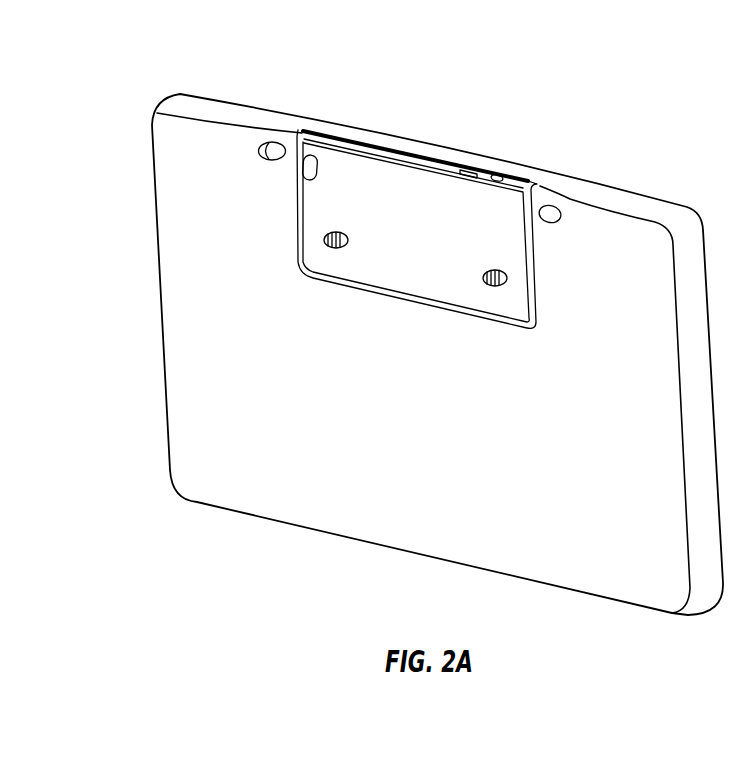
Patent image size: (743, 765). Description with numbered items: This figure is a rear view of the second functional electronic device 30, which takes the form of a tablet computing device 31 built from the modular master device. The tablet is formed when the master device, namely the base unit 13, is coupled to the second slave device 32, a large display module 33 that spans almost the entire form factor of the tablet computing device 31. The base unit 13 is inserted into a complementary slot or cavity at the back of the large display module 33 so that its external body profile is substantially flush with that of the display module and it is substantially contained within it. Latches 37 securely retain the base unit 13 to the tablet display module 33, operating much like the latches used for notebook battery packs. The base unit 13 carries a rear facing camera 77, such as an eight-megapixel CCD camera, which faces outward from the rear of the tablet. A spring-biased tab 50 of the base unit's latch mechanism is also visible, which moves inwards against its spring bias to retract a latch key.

The second functional electronic device 30 is at (429, 354).
The tablet computing device 31 is at (255, 533).
The second slave device 32 is at (423, 363).
The large display module 33 is at (563, 180).
The base unit 13 is at (405, 157).
The latches 37 is at (277, 143).
The rear facing camera 77 is at (312, 155).
The tab 50 is at (497, 272).